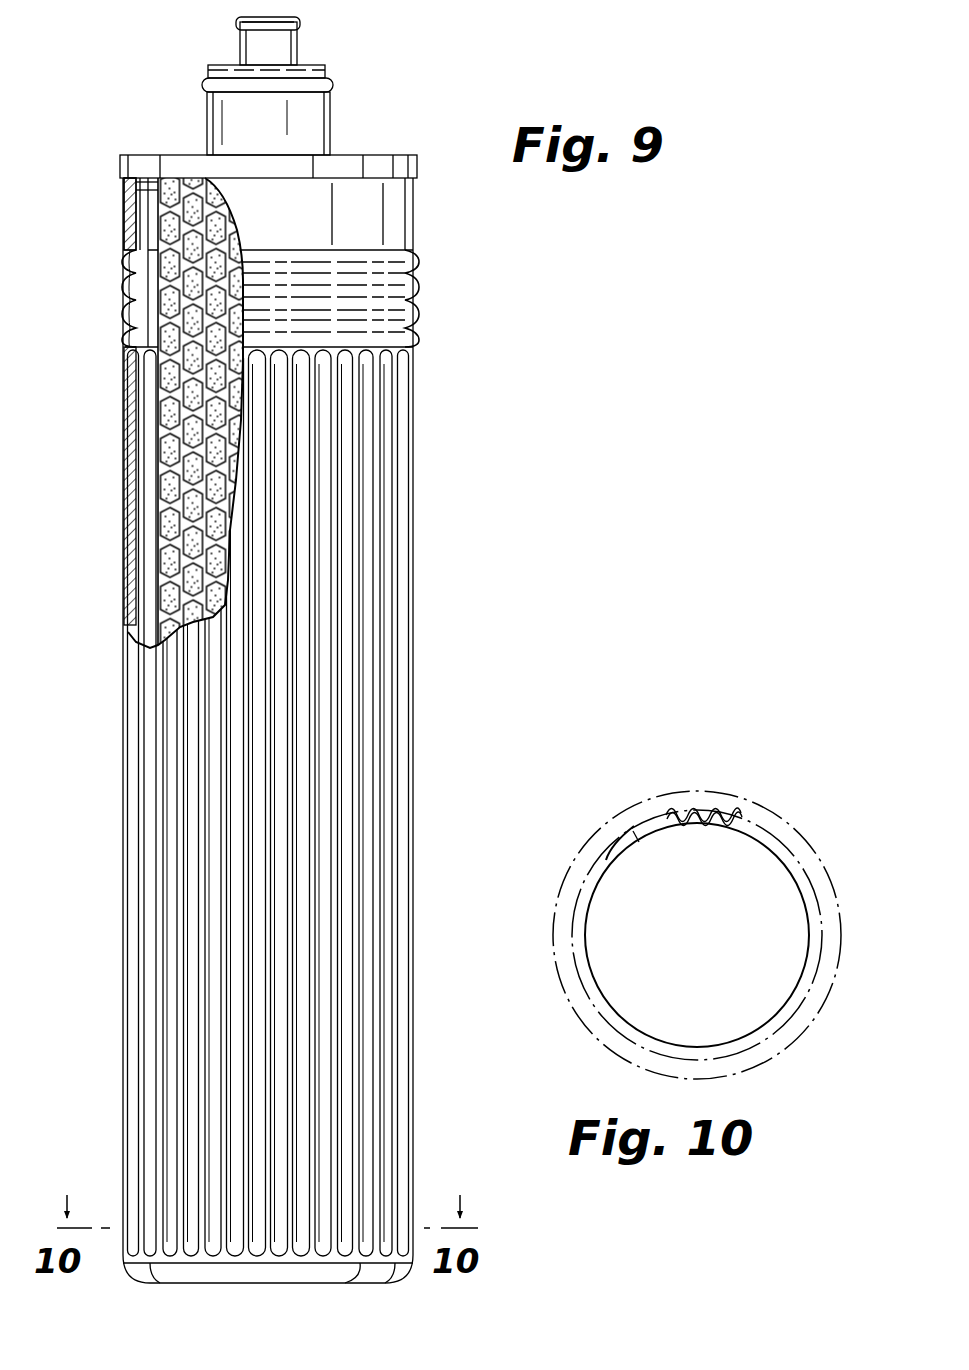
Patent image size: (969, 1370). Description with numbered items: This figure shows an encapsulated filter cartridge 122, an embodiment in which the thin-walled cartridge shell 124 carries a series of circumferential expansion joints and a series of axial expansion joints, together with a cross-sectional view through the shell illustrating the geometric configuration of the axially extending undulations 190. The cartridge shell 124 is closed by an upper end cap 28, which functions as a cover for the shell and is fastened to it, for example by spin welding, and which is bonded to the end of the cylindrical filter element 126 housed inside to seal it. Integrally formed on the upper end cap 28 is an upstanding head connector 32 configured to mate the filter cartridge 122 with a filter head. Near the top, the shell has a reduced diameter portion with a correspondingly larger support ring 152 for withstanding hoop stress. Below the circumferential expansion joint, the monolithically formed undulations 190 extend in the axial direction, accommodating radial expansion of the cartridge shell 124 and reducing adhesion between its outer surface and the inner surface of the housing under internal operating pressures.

In FIG. 9, the upper end cap 28 is at (383, 163).
In FIG. 9, the head connector 32 is at (217, 123).
In FIG. 9, the filter cartridge 122 is at (476, 374).
In FIG. 10, the filter cartridge 122 is at (749, 782).
In FIG. 9, the cartridge shell 124 is at (128, 406).
In FIG. 9, the cylindrical filter element 126 is at (166, 542).
In FIG. 10, the cylindrical filter element 126 is at (637, 842).
In FIG. 9, the support ring 152 is at (122, 232).
In FIG. 9, the axial undulations 190 is at (385, 547).
In FIG. 10, the axial undulations 190 is at (693, 803).